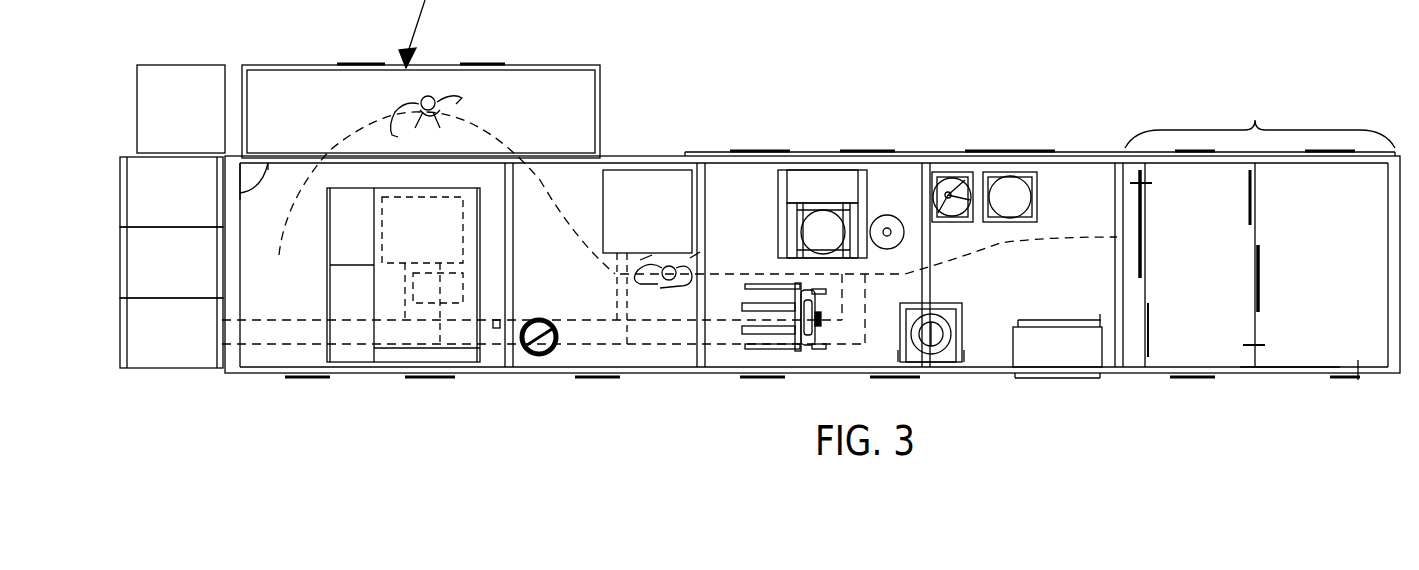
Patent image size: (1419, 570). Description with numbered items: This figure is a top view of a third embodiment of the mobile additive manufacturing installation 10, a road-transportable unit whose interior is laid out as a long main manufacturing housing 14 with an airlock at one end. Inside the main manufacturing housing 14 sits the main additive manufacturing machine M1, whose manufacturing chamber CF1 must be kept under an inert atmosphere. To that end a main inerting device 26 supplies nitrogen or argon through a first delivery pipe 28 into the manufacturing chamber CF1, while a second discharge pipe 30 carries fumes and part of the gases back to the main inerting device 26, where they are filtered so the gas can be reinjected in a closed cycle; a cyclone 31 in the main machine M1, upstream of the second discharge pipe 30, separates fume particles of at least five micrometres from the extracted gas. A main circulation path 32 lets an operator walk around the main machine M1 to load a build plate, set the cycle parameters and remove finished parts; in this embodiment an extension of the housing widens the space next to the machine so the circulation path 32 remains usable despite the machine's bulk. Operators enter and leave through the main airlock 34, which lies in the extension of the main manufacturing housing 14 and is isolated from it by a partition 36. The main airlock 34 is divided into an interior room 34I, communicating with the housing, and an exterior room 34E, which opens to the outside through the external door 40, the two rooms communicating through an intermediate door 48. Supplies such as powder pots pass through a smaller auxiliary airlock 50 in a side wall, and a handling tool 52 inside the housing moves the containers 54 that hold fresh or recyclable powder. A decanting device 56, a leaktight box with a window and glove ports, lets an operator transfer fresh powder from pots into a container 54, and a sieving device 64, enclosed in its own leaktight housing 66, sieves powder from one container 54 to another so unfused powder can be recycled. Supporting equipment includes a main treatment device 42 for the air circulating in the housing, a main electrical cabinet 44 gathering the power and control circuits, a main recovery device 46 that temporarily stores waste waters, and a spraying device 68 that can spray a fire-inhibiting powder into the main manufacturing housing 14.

The mobile additive manufacturing installation 10 is at (917, 112).
The main manufacturing housing 14 is at (997, 287).
The main inerting device 26 is at (165, 343).
The first delivery pipe 28 is at (288, 322).
The second discharge pipe 30 is at (270, 346).
The cyclone 31 is at (403, 275).
The main circulation path 32 is at (487, 105).
The main airlock 34 is at (1260, 113).
The interior room 34I is at (1184, 220).
The exterior room 34E is at (1340, 220).
The partition 36 is at (1143, 280).
The external door 40 is at (1292, 378).
The main treatment device 42 is at (165, 188).
The main electrical cabinet 44 is at (162, 265).
The main recovery device 46 is at (165, 111).
The intermediate door 48 is at (1258, 312).
The auxiliary airlock 50 is at (1060, 352).
The handling tool 52 is at (762, 347).
The container 54 is at (962, 178).
The decanting device 56 is at (632, 185).
The sieving device 64 is at (845, 168).
The housing 66 is at (810, 170).
The spraying device 68 is at (258, 170).
The manufacturing chamber CF1 is at (422, 230).
The main additive manufacturing machine M1 is at (495, 265).